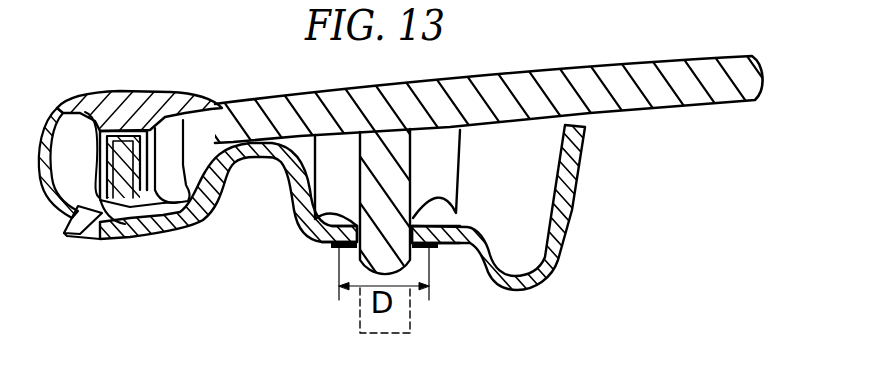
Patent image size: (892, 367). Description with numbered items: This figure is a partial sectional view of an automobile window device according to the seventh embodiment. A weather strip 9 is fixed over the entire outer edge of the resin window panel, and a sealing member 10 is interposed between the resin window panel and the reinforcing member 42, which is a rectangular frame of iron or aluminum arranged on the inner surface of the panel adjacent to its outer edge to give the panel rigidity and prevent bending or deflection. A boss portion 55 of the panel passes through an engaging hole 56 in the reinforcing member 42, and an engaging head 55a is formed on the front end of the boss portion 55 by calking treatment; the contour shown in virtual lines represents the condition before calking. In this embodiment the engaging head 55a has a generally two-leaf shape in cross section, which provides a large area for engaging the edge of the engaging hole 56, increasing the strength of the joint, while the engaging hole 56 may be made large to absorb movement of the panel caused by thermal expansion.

The weather strip 9 is at (145, 89).
The sealing member 10 is at (247, 158).
The reinforcing member 42 is at (510, 293).
The boss portion 55 is at (311, 238).
The engaging head 55a is at (355, 251).
The engaging hole 56 is at (413, 218).